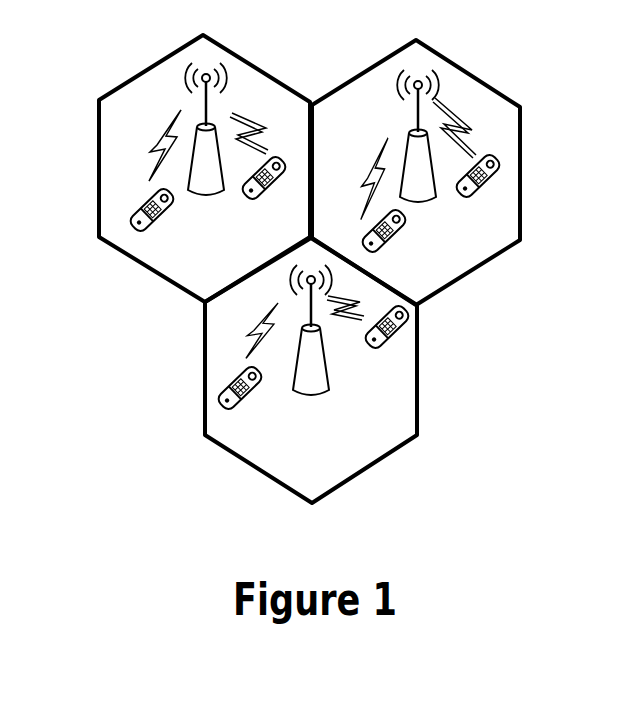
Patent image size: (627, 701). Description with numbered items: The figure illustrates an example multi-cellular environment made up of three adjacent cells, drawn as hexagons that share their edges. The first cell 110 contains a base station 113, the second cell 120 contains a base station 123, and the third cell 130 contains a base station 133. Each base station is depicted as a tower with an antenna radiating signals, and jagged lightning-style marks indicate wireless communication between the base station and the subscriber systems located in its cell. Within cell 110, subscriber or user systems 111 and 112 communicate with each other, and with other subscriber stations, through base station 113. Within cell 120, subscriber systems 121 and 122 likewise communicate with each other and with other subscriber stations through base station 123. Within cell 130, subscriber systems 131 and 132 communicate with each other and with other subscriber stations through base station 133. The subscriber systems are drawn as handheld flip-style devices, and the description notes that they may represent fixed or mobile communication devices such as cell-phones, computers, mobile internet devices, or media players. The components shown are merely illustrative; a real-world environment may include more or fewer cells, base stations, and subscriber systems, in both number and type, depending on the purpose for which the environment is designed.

The cell 110 is at (99, 158).
The subscriber system 111 is at (152, 226).
The subscriber system 112 is at (263, 198).
The base station 113 is at (206, 194).
The cell 120 is at (521, 178).
The subscriber system 121 is at (380, 251).
The subscriber system 122 is at (476, 196).
The base station 123 is at (418, 200).
The cell 130 is at (205, 385).
The subscriber system 131 is at (238, 408).
The subscriber system 132 is at (384, 348).
The base station 133 is at (311, 394).